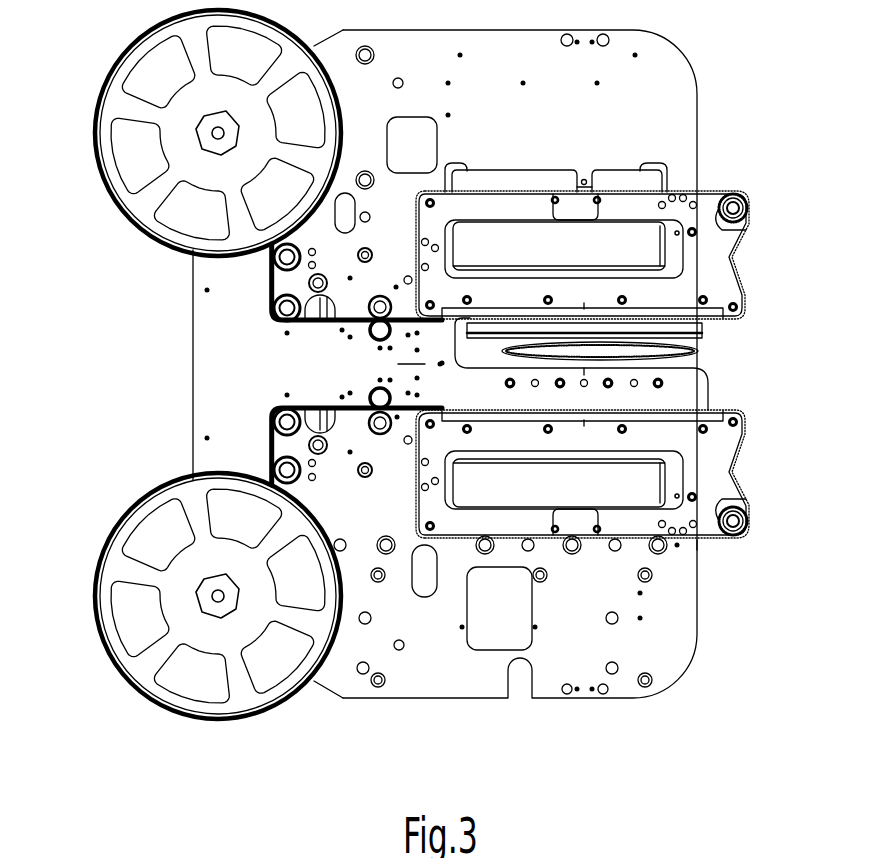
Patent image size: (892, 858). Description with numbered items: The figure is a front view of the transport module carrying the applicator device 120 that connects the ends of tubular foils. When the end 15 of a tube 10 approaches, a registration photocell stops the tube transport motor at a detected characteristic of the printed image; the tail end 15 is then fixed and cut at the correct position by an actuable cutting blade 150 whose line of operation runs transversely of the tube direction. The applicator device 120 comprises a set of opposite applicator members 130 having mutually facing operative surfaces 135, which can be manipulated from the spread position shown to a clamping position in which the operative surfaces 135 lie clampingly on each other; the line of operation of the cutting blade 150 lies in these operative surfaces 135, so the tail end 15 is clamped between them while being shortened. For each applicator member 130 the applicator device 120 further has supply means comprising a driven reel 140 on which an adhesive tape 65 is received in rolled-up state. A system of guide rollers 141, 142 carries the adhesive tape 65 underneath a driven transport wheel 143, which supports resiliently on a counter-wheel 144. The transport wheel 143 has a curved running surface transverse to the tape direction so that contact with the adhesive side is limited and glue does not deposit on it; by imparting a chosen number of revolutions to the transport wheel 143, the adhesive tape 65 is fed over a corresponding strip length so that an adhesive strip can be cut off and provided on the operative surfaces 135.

The tube 10 is at (658, 358).
The tube end 15 is at (700, 350).
The adhesive tape 65 is at (268, 290).
The applicator device 120 is at (672, 648).
The applicator members 130 is at (722, 236).
The operative surfaces 135 is at (703, 398).
The driven reel 140 is at (122, 55).
The guide roller 141 is at (274, 258).
The guide roller 142 is at (273, 318).
The driven transport wheel 143 is at (379, 293).
The counter-wheel 144 is at (370, 337).
The cutting blade 150 is at (707, 327).